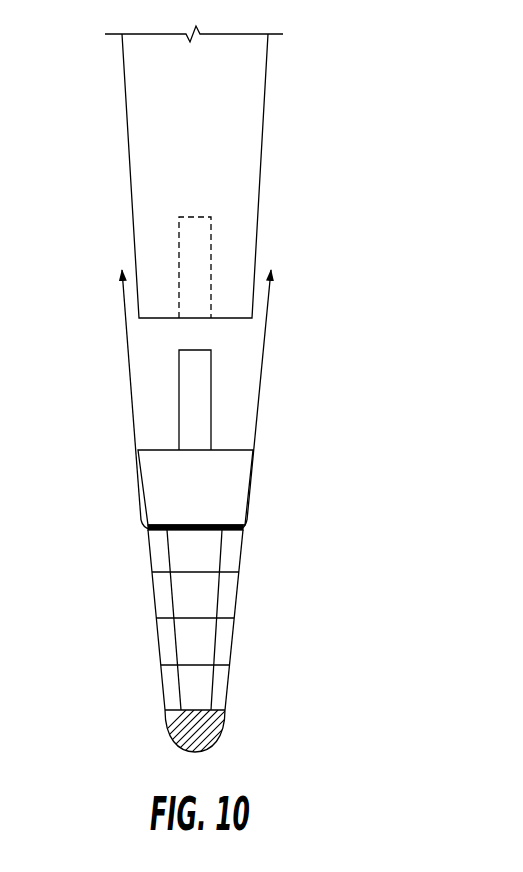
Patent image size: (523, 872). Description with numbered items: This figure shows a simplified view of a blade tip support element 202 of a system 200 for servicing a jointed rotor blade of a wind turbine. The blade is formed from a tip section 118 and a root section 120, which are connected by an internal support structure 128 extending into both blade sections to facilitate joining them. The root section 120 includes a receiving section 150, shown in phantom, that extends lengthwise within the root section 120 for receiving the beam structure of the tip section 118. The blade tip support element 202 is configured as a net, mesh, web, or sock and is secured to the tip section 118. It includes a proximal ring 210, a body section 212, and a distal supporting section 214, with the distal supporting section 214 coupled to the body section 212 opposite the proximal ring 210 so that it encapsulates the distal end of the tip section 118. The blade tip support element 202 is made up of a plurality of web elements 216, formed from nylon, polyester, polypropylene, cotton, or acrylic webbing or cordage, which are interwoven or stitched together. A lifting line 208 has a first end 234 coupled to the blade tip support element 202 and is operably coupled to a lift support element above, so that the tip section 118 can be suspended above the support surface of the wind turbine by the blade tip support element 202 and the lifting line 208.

The system 200 is at (360, 137).
The root section 120 is at (237, 156).
The receiving section 150 is at (200, 250).
The lifting line 208 is at (120, 332).
The internal support structure 128 is at (179, 412).
The first end 234 is at (270, 434).
The tip section 118 is at (222, 480).
The proximal ring 210 is at (262, 503).
The body section 212 is at (294, 597).
The web elements 216 is at (165, 575).
The distal supporting section 214 is at (163, 734).
The blade tip support element 202 is at (228, 685).